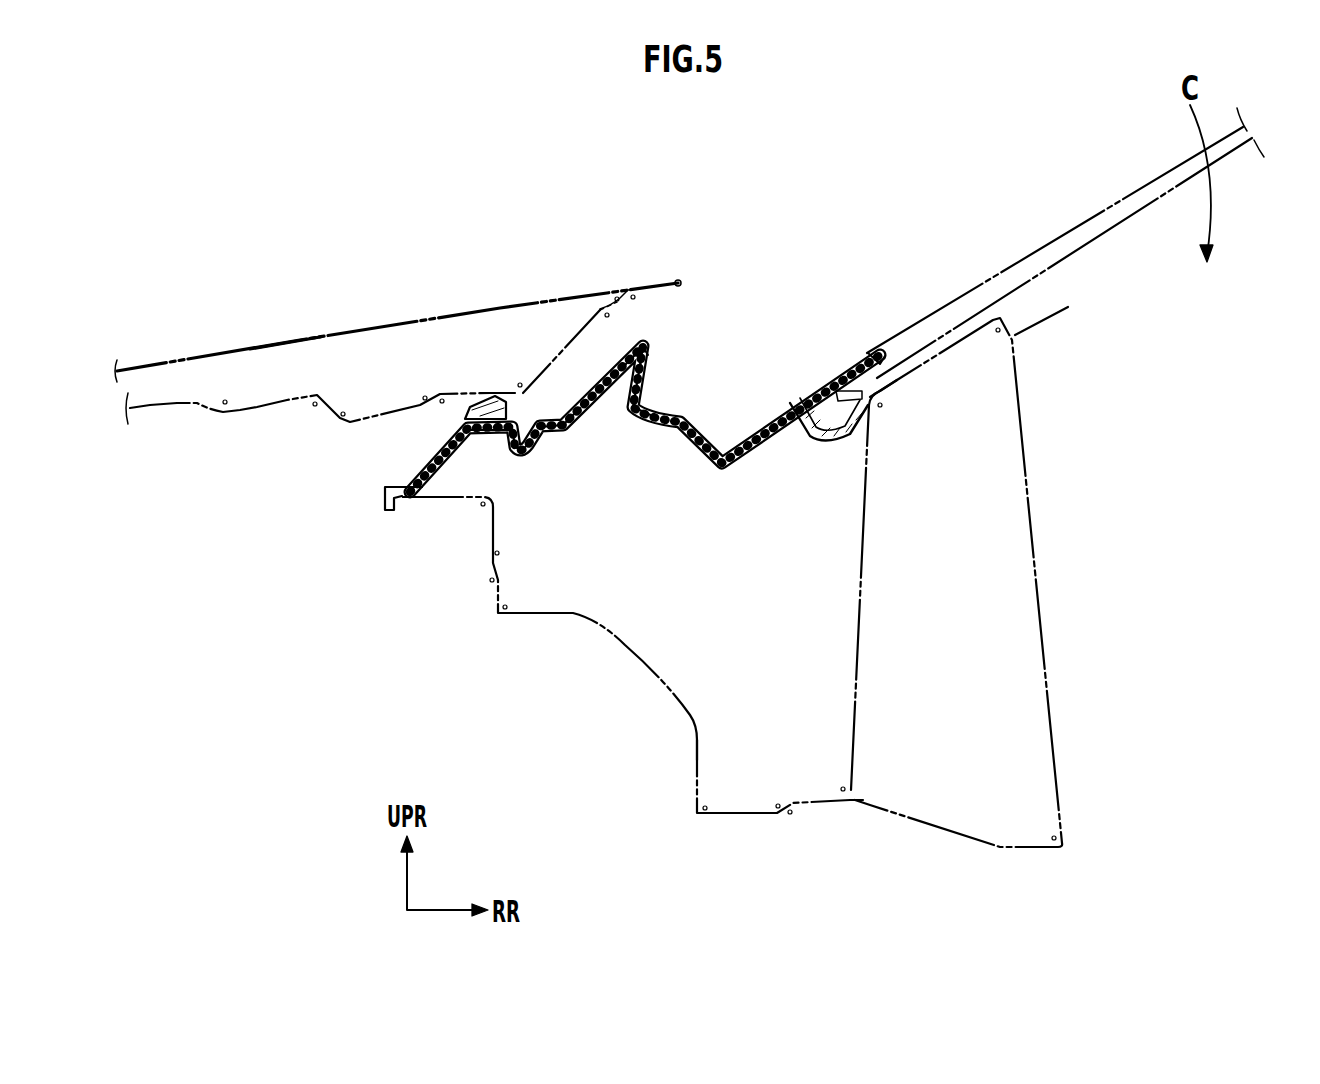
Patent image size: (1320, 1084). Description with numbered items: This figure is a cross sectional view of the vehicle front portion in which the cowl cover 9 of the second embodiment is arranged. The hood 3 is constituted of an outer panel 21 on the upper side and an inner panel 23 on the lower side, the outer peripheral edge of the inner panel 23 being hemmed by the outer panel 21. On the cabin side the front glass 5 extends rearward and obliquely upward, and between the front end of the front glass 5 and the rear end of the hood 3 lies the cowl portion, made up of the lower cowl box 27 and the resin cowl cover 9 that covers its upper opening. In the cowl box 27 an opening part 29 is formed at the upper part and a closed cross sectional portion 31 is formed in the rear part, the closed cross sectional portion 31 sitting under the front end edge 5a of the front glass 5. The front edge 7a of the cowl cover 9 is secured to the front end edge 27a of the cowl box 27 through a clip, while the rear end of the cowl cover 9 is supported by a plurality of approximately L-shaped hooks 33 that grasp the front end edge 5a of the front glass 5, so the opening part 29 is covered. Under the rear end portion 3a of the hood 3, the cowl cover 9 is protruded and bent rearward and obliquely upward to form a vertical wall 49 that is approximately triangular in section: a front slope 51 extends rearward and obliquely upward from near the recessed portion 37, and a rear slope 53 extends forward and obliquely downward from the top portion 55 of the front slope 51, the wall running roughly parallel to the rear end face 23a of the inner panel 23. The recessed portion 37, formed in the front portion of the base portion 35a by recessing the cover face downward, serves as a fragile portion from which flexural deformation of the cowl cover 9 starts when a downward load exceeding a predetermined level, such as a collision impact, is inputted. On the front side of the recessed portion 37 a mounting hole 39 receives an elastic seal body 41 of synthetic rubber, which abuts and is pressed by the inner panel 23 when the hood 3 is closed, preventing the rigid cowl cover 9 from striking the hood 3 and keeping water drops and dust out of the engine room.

The hood 3 is at (372, 312).
The rear end portion of the hood 3a is at (618, 292).
The front glass 5 is at (1130, 180).
The front end edge of the front glass 5a is at (864, 350).
The front edge of the cowl cover 7a is at (395, 487).
The cowl cover 9 is at (770, 322).
The outer panel 21 is at (285, 332).
The inner panel 23 is at (254, 412).
The rear end face of the inner panel 23a is at (582, 335).
The cowl box 27 is at (750, 830).
The front end edge of the cowl box 27a is at (411, 502).
The opening part 29 is at (708, 490).
The closed cross sectional portion 31 is at (1005, 675).
The hooks 33 is at (840, 442).
The base portion of the vertical wall 35a is at (558, 416).
The recessed portion 37 is at (528, 457).
The mounting hole 39 is at (480, 435).
The elastic seal body 41 is at (488, 396).
The vertical wall 49 is at (652, 332).
The front slope 51 is at (600, 383).
The rear slope 53 is at (647, 370).
The top portion 55 is at (651, 345).